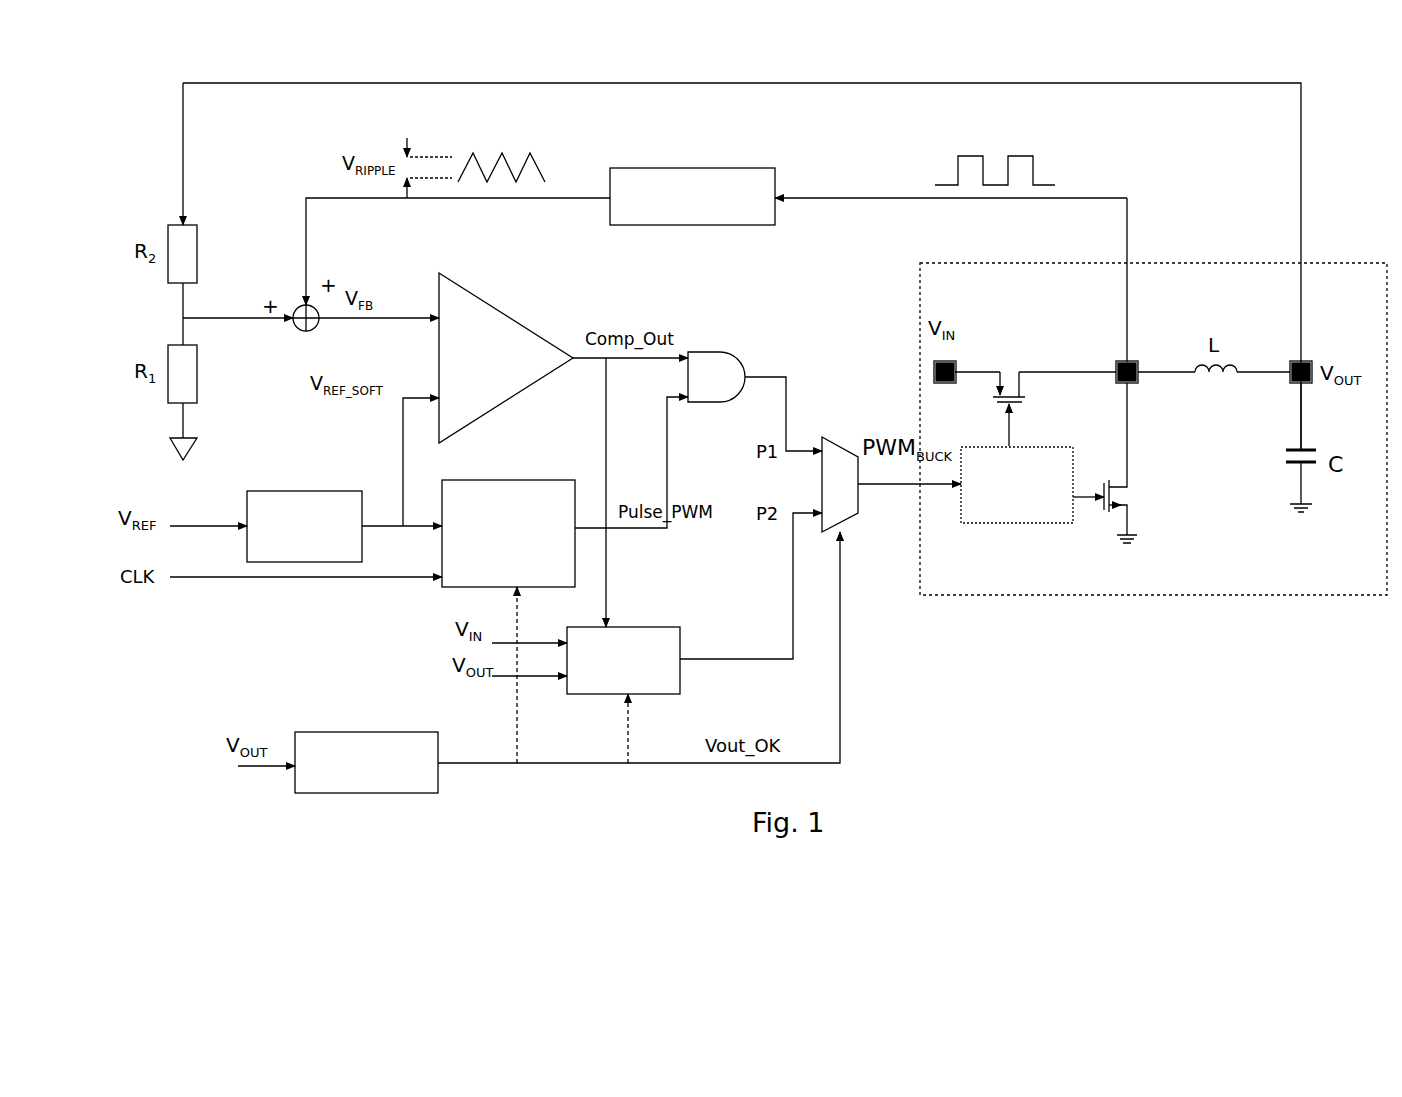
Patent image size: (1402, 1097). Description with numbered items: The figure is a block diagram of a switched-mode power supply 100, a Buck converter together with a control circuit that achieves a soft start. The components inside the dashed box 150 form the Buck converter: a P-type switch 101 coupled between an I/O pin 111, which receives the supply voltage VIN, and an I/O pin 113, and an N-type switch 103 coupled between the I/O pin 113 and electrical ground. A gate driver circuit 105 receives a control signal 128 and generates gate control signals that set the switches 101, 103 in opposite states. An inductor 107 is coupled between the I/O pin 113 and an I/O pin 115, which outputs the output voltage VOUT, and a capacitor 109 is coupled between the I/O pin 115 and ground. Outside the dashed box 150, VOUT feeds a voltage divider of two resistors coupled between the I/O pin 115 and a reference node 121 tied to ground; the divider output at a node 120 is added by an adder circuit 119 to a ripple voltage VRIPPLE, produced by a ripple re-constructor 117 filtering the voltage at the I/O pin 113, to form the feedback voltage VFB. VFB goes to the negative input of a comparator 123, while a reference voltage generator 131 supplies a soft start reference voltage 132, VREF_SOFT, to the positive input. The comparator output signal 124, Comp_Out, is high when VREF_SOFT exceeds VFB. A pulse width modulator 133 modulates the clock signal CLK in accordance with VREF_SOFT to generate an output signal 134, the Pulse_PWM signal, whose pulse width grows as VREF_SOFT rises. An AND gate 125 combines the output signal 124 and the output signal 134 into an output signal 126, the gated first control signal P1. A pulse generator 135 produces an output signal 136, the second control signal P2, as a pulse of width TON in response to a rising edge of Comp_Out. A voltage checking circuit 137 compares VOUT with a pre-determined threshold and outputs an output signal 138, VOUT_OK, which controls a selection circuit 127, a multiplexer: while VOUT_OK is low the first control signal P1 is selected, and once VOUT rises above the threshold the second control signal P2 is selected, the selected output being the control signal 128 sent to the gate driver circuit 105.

The switched-mode power supply 100 is at (90, 95).
The switch 101 is at (1010, 356).
The switch 103 is at (1133, 497).
The gate driver circuit 105 is at (1010, 525).
The inductor 107 is at (1232, 362).
The capacitor 109 is at (1310, 465).
The input/output pin 111 is at (956, 362).
The input/output pin 113 is at (1131, 362).
The input/output pin 115 is at (1308, 362).
The ripple re-constructor 117 is at (705, 168).
The adder circuit 119 is at (298, 307).
The node 120 is at (183, 318).
The reference node 121 is at (170, 452).
The comparator 123 is at (490, 305).
The output signal 124 is at (585, 357).
The AND gate 125 is at (706, 352).
The output signal 126 is at (768, 377).
The selection circuit 127 is at (846, 449).
The control signal 128 is at (878, 490).
The reference voltage generator 131 is at (302, 491).
The reference voltage 132 is at (390, 524).
The pulse width modulator 133 is at (524, 480).
The output signal 134 is at (638, 530).
The pulse generator 135 is at (681, 641).
The output signal 136 is at (735, 659).
The voltage checking circuit 137 is at (366, 732).
The output signal 138 is at (470, 766).
The dashed box 150 is at (1352, 263).